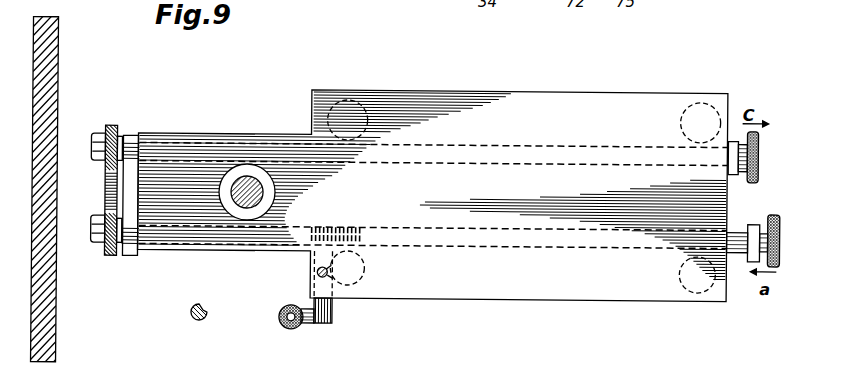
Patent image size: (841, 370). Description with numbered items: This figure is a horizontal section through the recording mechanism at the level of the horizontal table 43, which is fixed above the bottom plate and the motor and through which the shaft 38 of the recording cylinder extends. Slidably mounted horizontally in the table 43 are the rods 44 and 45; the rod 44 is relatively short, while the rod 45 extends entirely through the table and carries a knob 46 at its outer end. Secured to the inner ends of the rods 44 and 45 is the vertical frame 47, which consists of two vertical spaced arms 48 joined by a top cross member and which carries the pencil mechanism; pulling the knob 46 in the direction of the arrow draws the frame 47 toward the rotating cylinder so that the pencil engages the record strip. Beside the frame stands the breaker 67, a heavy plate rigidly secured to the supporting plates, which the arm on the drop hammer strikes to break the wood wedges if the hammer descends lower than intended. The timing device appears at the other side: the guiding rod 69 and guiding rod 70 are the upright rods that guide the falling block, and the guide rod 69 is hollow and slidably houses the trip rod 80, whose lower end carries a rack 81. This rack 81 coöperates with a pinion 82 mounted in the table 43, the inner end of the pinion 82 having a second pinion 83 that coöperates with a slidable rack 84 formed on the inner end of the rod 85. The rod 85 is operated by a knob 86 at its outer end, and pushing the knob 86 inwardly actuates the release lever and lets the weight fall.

The breaker 67 is at (58, 75).
The horizontal table 43 is at (510, 94).
The shaft 38 is at (264, 202).
The rod 85 is at (497, 244).
The second pinion 83 is at (323, 228).
The slidable rack 84 is at (362, 229).
The vertical frame 47 is at (103, 193).
The rod 45 is at (132, 142).
The vertical spaced arms 48 is at (107, 138).
The rod 44 is at (133, 243).
The guiding rod 70 is at (192, 320).
The knob 46 is at (758, 139).
The knob 86 is at (777, 217).
The pinion 82 is at (335, 318).
The rack 81 is at (316, 325).
The trip rod 80 is at (291, 323).
The guiding rod 69 is at (282, 310).